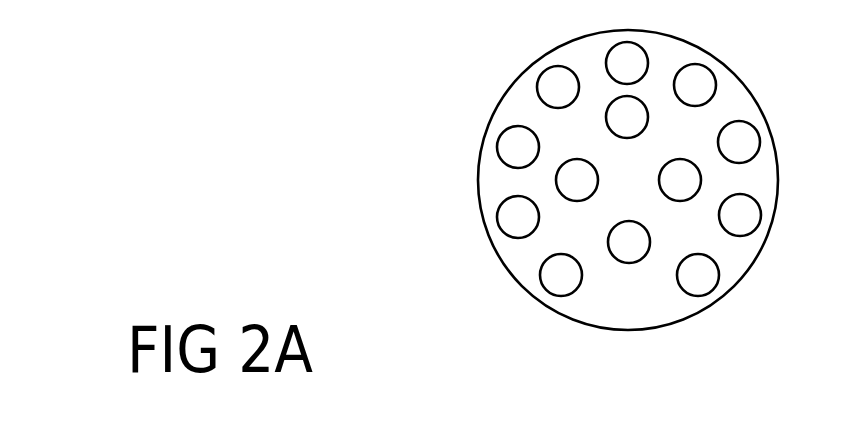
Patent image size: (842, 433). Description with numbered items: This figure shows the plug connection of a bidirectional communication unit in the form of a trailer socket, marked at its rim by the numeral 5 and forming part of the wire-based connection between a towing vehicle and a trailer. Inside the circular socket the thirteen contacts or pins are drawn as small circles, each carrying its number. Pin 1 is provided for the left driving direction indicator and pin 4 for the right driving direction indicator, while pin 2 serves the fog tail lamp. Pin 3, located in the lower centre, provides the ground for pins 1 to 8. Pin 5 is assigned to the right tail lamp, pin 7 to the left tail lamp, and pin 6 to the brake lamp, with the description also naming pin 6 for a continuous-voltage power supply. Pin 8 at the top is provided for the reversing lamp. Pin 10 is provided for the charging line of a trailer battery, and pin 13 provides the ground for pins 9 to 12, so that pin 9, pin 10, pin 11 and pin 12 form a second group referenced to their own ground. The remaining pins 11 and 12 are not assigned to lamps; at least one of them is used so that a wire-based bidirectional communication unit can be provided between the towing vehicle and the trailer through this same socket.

The pin 5 is at (758, 181).
The pin 1 is at (627, 117).
The pin 2 is at (680, 180).
The pin 3 is at (629, 242).
The pin 4 is at (577, 180).
The pin 6 is at (518, 147).
The pin 7 is at (558, 87).
The pin 8 is at (627, 63).
The pin 9 is at (695, 85).
The pin 10 is at (739, 142).
The pin 11 is at (740, 215).
The pin 12 is at (698, 275).
The pin 13 is at (561, 275).